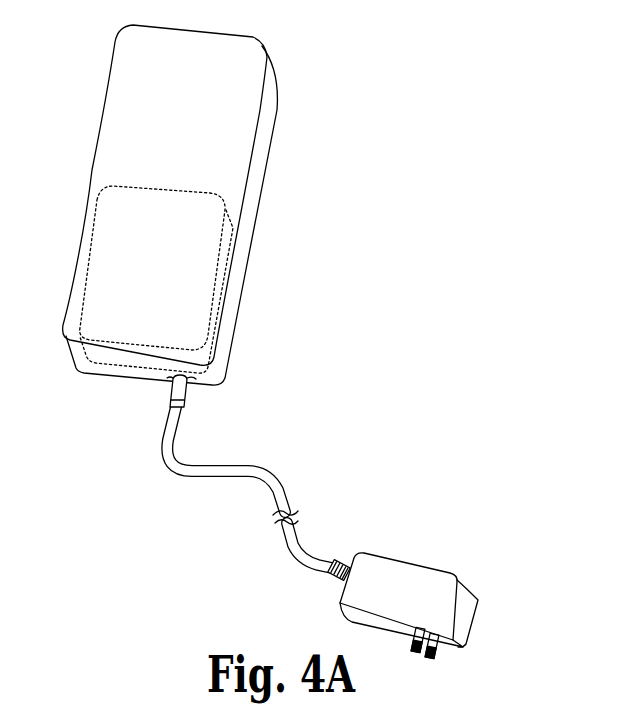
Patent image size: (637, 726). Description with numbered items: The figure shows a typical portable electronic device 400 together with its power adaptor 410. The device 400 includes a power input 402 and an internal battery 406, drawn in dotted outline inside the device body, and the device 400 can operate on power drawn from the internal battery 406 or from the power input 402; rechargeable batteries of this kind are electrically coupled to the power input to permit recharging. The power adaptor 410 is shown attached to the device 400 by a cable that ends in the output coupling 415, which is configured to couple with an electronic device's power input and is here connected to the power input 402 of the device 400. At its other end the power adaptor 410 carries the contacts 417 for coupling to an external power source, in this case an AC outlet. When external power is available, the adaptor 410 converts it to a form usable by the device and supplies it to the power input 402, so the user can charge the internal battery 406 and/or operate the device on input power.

The portable electronic device 400 is at (107, 82).
The internal battery 406 is at (107, 230).
The power input 402 is at (192, 378).
The output coupling 415 is at (167, 400).
The power adaptor 410 is at (402, 567).
The contacts 417 is at (433, 655).